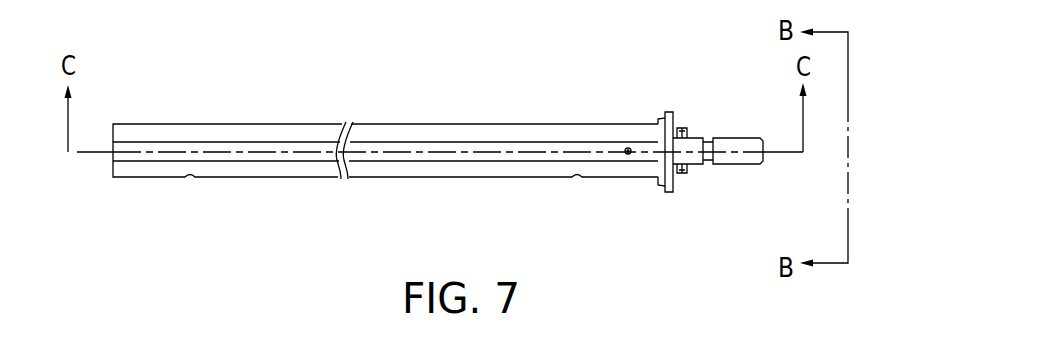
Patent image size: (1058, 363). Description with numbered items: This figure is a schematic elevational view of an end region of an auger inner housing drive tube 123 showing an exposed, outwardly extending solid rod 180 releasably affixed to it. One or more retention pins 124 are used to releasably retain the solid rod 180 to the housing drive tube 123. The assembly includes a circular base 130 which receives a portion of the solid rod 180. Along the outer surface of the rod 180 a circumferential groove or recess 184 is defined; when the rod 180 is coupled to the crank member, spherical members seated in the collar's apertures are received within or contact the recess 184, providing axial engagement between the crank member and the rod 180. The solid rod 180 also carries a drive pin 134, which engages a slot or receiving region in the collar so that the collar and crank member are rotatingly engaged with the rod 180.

The inner housing drive tube 123 is at (422, 123).
The retention pin 124 is at (628, 155).
The circular base 130 is at (668, 112).
The drive pin 134 is at (685, 129).
The circumferential groove 184 is at (707, 165).
The solid rod 180 is at (740, 165).